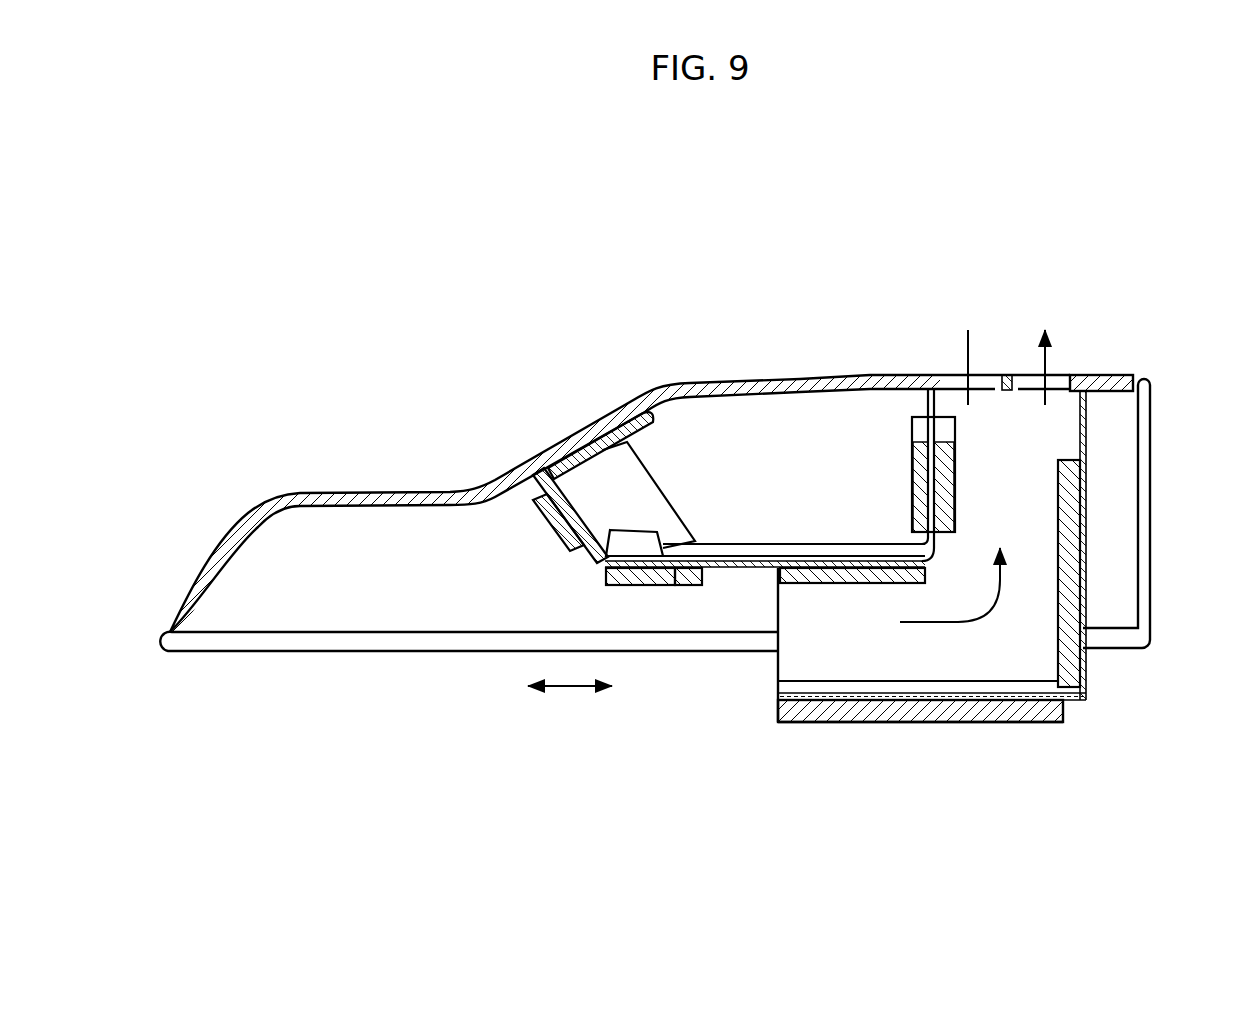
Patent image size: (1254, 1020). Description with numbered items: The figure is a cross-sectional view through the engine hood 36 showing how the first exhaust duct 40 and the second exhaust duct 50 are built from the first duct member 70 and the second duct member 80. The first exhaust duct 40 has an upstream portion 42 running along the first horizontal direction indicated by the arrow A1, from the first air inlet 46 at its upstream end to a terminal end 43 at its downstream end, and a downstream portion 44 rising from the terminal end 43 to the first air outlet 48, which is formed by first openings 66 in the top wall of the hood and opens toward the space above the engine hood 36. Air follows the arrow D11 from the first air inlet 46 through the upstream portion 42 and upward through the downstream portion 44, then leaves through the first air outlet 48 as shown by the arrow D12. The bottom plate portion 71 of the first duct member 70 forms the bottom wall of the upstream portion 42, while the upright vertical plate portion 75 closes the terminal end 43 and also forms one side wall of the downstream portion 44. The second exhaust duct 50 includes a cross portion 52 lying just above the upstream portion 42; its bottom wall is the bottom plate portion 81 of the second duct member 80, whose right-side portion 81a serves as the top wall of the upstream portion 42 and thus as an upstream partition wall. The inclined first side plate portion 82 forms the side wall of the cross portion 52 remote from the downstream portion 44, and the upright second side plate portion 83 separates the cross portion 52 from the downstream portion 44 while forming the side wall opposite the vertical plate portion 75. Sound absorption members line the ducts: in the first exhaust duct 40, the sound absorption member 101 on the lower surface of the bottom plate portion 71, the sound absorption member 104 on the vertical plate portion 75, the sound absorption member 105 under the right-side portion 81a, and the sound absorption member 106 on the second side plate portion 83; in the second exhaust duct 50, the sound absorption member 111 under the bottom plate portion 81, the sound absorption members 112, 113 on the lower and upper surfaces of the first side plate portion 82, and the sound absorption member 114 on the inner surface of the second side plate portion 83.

The engine hood 36 is at (415, 426).
The first exhaust duct 40 is at (1100, 668).
The upstream portion 42 is at (890, 665).
The terminal end 43 is at (1008, 645).
The downstream portion 44 is at (1062, 437).
The first air inlet 46 is at (786, 641).
The first air outlet 48 is at (1010, 362).
The second exhaust duct 50 is at (712, 436).
The cross portion 52 is at (848, 408).
The first openings 66 is at (1020, 386).
The first duct member 70 is at (1088, 712).
The bottom plate portion 71 is at (806, 723).
The vertical plate portion 75 is at (1084, 551).
The second duct member 80 is at (594, 578).
The bottom plate portion 81 is at (675, 587).
The right-side portion 81a is at (853, 552).
The first side plate portion 82 is at (560, 513).
The second side plate portion 83 is at (926, 407).
The sound absorption member 101 is at (845, 723).
The sound absorption member 104 is at (1067, 605).
The sound absorption member 105 is at (836, 586).
The sound absorption member 106 is at (956, 478).
The sound absorption member 111 is at (632, 588).
The sound absorption member 112 is at (560, 534).
The sound absorption member 113 is at (597, 490).
The sound absorption member 114 is at (910, 464).
The arrow D11 is at (940, 624).
The arrow D12 is at (1047, 348).
The arrow A1 is at (566, 690).